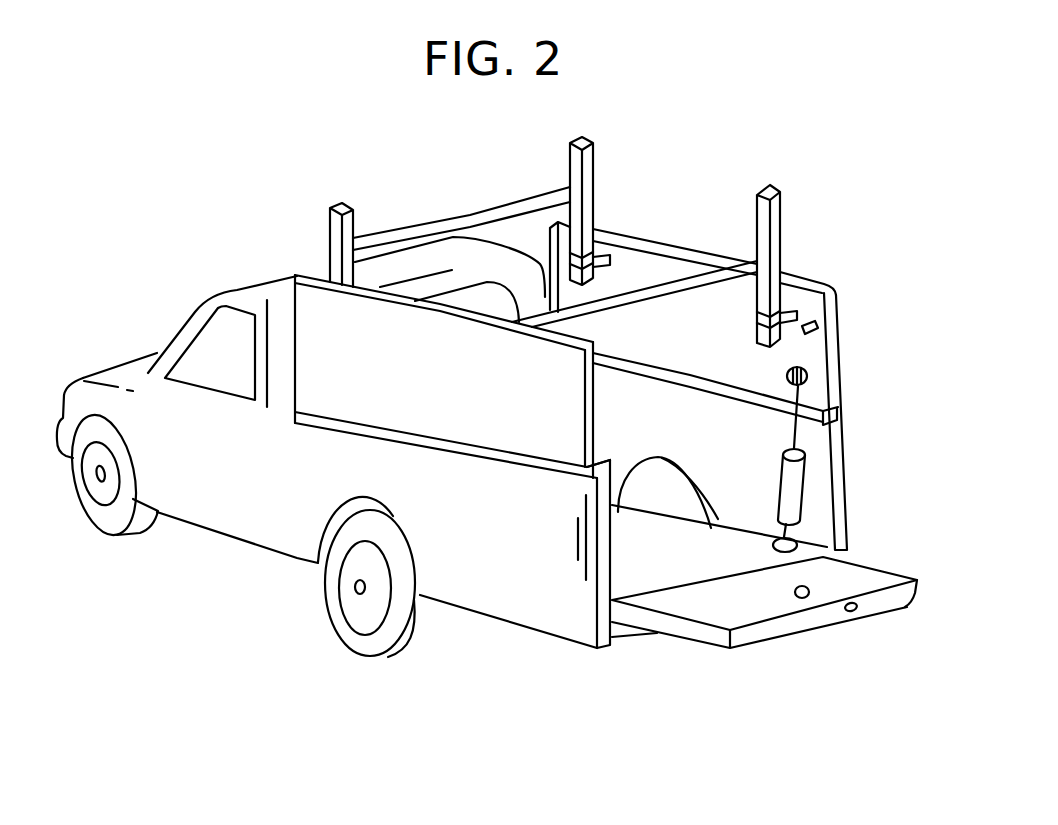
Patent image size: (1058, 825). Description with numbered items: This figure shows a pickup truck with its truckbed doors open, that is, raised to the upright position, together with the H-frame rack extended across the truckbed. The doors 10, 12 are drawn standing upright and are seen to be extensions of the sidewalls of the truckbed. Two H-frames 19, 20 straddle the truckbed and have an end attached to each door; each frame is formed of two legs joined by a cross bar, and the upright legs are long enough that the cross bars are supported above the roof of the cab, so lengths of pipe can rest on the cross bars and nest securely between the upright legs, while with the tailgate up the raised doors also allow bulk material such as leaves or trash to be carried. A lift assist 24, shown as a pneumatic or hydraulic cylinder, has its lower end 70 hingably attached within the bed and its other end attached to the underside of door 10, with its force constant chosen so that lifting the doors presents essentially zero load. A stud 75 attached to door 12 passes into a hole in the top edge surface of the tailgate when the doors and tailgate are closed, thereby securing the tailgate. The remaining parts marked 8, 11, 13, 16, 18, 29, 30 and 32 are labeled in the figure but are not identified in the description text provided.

The truck bed body side 8 is at (512, 602).
The door 10 is at (815, 310).
The tailgate 11 is at (868, 603).
The door 12 is at (368, 410).
The panel rail 13 is at (305, 428).
The far side panel 16 is at (672, 417).
The bracket 18 is at (604, 250).
The H-frame 19 is at (475, 212).
The H-frame 20 is at (772, 208).
The lift assist 24 is at (800, 483).
The tailgate hole 29 is at (812, 597).
The rear corner post 30 is at (642, 573).
The knob 32 is at (810, 375).
The lower end of the lift assist 70 is at (815, 543).
The stud 75 is at (817, 335).